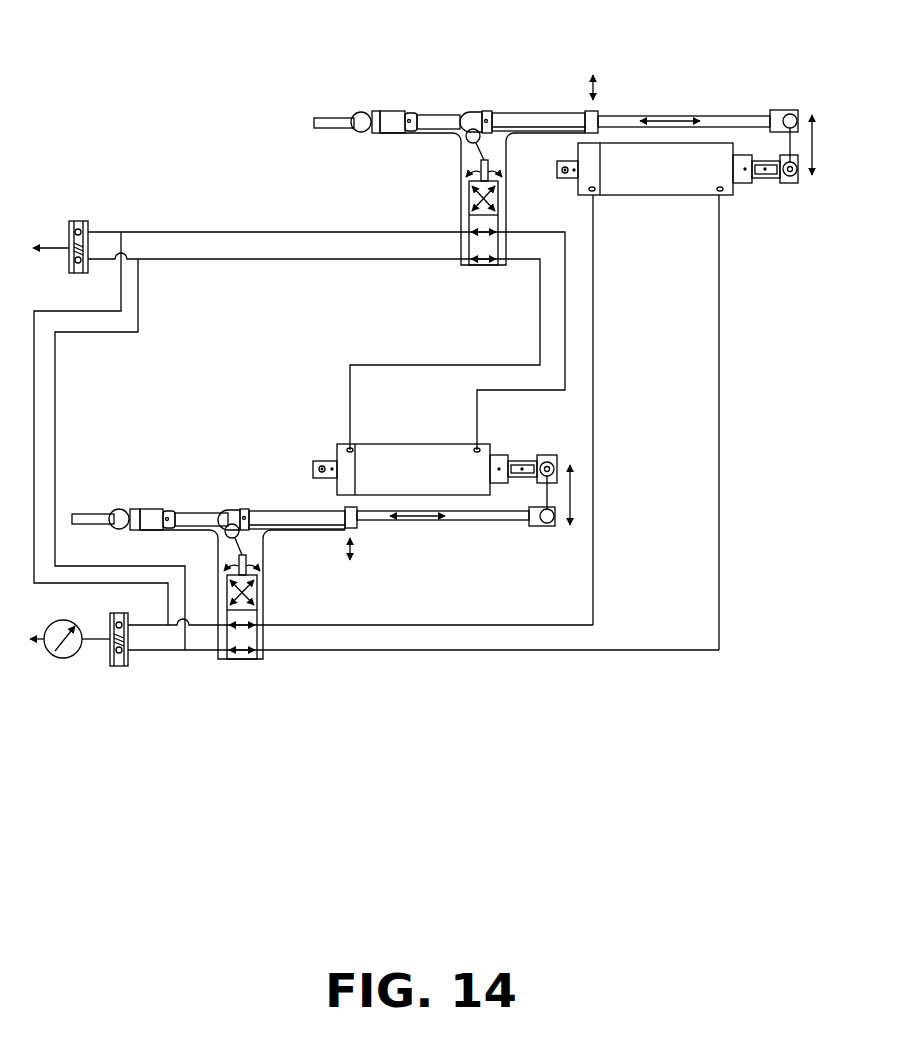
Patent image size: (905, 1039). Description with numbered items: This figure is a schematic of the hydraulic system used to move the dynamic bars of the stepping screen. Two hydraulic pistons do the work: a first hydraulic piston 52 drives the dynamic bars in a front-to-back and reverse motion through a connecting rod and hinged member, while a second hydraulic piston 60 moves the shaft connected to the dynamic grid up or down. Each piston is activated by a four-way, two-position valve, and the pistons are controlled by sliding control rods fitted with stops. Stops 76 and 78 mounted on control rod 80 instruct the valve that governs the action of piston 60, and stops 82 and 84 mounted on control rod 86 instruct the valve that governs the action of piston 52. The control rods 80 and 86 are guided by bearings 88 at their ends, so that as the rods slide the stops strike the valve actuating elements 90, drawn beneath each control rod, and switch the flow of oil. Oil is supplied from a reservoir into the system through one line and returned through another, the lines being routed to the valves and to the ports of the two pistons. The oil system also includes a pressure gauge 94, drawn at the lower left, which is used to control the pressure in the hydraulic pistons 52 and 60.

The first hydraulic piston 52 is at (388, 452).
The second hydraulic piston 60 is at (667, 178).
The stop 76 is at (408, 113).
The stop 78 is at (485, 112).
The control rod 80 is at (552, 120).
The stop 82 is at (168, 508).
The stop 84 is at (243, 508).
The control rod 86 is at (205, 513).
The bearings 88 is at (378, 117).
The valve 90 is at (473, 130).
The pressure gauge 94 is at (68, 660).